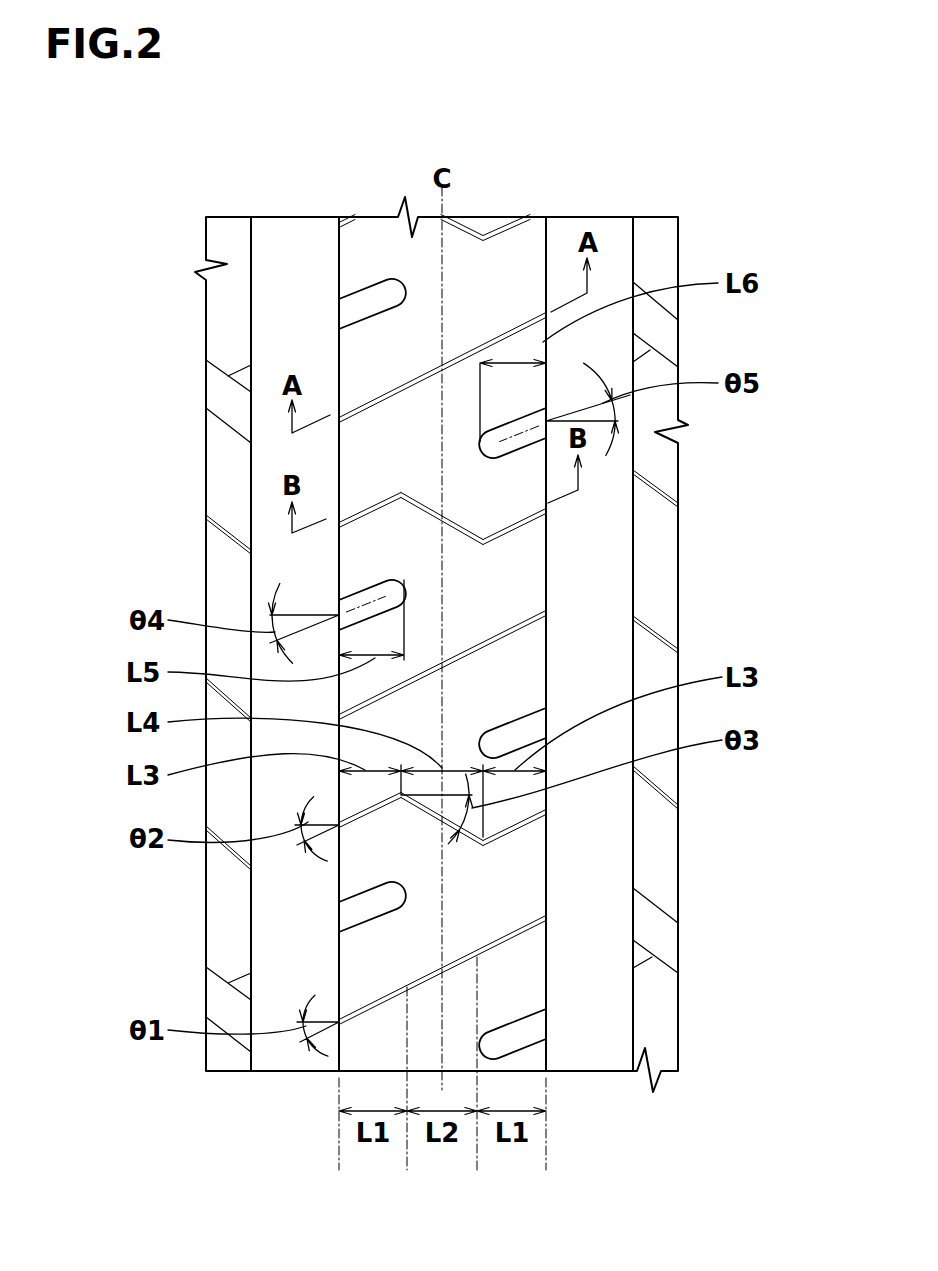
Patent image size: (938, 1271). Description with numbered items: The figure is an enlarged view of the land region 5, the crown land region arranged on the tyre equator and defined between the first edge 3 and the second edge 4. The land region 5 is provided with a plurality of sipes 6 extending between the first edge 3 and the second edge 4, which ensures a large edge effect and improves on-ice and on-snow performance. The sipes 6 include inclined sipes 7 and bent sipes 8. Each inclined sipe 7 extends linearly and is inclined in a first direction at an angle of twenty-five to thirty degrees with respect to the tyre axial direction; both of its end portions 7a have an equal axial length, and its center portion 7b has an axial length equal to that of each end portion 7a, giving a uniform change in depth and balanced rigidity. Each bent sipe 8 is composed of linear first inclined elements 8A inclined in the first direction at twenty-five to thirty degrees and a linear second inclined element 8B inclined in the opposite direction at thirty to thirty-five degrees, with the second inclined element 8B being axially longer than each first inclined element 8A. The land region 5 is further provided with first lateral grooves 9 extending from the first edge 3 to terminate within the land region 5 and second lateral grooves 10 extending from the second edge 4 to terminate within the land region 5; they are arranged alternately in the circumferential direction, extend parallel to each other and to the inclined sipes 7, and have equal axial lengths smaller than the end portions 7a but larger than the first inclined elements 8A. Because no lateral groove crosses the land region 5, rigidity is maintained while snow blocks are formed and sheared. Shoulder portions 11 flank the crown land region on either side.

The first edge 3 is at (331, 240).
The second edge 4 is at (559, 242).
The land region 5 is at (500, 612).
The sipes 6 is at (590, 582).
The inclined sipes 7 is at (408, 383).
The bent sipes 8 is at (590, 580).
The first inclined elements 8A is at (517, 530).
The second inclined element 8B is at (455, 525).
The first lateral grooves 9 is at (360, 592).
The second lateral grooves 10 is at (523, 423).
The shoulder land portion 11 is at (277, 1048).
The end portions 7a is at (546, 1160).
The center portion 7b is at (407, 1160).